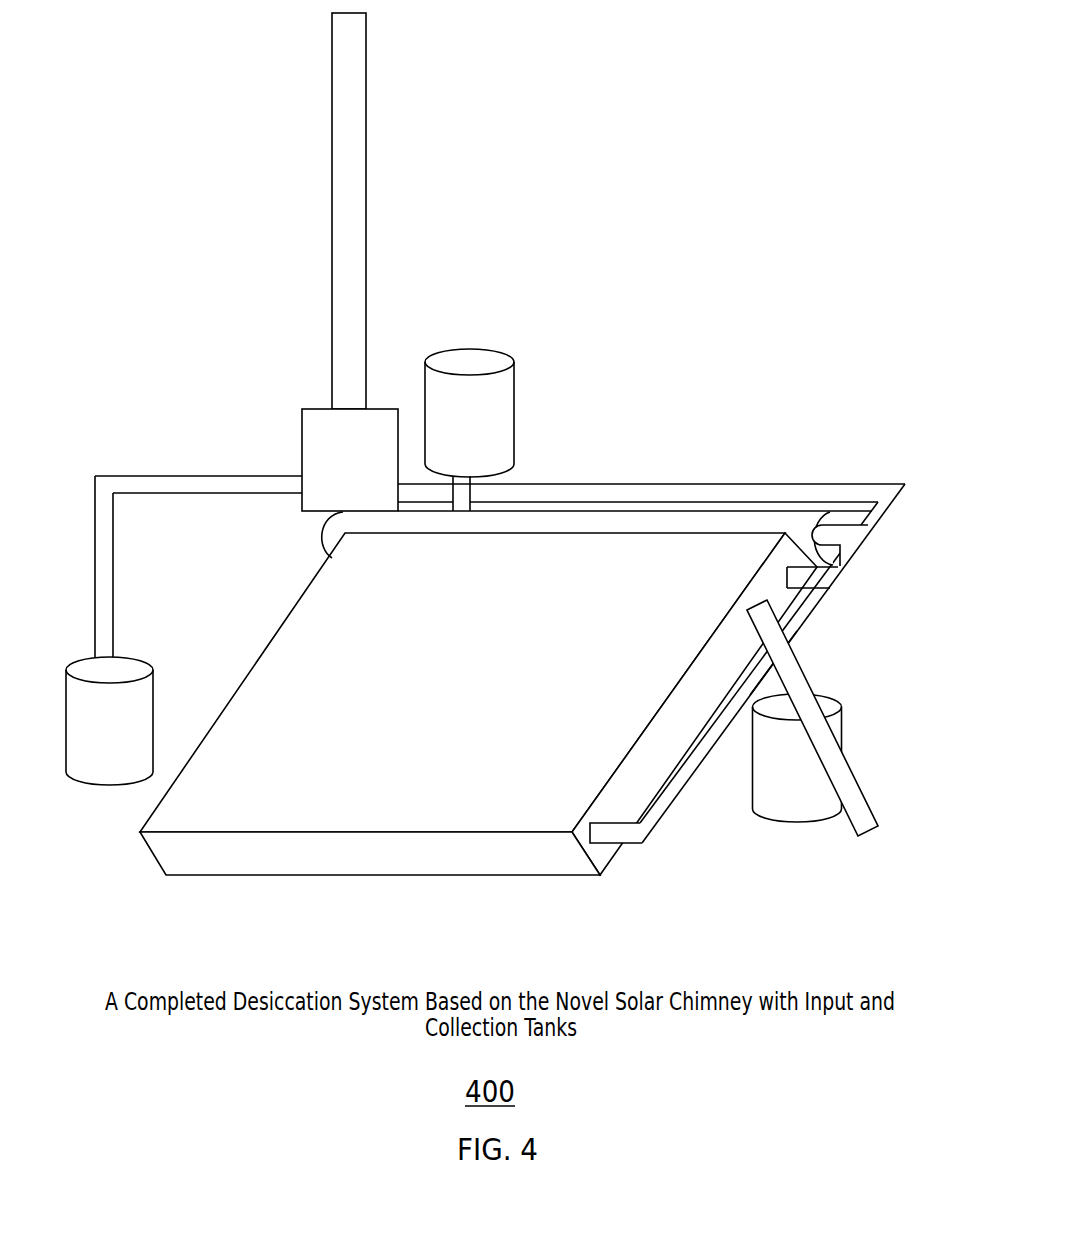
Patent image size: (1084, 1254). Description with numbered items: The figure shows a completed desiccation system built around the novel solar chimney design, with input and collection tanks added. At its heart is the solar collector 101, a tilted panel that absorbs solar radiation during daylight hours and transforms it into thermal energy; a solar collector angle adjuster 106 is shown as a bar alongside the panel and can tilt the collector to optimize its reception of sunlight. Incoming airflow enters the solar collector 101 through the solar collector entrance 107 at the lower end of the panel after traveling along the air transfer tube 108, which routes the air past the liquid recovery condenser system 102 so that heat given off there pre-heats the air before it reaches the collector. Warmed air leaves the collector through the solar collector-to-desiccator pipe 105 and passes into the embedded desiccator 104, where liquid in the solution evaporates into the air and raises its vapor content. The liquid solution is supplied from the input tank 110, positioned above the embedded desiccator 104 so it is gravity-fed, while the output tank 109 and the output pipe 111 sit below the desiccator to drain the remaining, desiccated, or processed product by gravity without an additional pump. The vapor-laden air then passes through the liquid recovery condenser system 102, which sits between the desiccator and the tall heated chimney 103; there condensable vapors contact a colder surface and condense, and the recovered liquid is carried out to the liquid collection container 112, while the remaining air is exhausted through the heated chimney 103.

The solar collector 101 is at (257, 636).
The liquid recovery condenser system 102 is at (282, 452).
The heated chimney 103 is at (312, 243).
The embedded desiccator 104 is at (556, 485).
The solar collector-to-desiccator pipe 105 is at (880, 564).
The solar collector angle adjuster 106 is at (834, 669).
The solar collector entrance 107 is at (618, 846).
The air transfer tube 108 is at (646, 458).
The output tank 109 is at (869, 723).
The input tank 110 is at (471, 325).
The output pipe 111 is at (762, 707).
The liquid collection container 112 is at (72, 675).